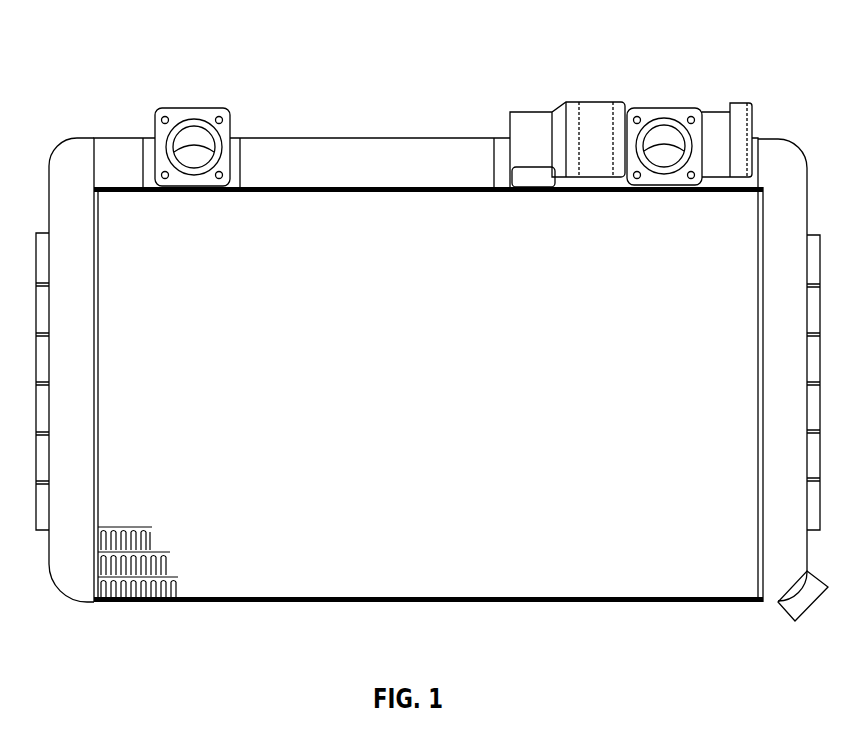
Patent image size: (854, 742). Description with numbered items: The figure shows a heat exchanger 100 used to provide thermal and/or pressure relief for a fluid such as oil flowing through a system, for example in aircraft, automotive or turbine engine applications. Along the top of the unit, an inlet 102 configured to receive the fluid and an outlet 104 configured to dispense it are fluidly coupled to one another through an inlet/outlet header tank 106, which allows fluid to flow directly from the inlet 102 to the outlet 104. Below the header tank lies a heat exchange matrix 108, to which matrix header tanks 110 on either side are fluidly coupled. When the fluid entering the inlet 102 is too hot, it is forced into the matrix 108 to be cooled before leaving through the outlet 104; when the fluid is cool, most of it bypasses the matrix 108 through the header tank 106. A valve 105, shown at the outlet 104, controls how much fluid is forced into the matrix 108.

The heat exchanger 100 is at (114, 50).
The inlet 102 is at (190, 128).
The outlet 104 is at (662, 135).
The valve 105 is at (600, 118).
The inlet/outlet header tank 106 is at (300, 153).
The heat exchange matrix 108 is at (360, 230).
The matrix header tank 110 is at (68, 168).